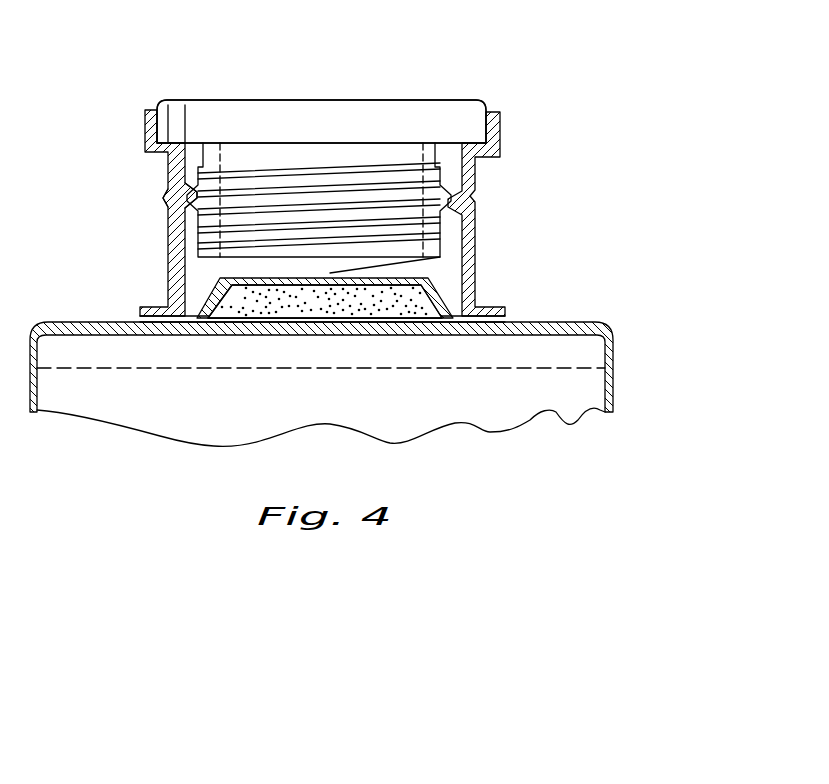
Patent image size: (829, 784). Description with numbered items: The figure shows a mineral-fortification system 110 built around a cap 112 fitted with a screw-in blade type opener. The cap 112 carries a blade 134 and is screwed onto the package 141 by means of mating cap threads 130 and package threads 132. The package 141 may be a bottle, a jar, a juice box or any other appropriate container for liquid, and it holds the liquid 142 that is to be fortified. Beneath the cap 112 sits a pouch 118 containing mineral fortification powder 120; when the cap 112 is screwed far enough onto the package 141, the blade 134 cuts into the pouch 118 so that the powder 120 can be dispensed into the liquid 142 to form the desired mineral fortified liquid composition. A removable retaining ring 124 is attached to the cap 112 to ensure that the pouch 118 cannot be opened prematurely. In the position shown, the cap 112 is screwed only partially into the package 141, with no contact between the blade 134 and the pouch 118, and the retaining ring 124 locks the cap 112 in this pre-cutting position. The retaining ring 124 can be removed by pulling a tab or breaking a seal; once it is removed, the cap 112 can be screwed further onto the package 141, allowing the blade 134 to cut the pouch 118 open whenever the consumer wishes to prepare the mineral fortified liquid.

The mineral-fortification system 110 is at (543, 73).
The cap 112 is at (226, 108).
The pouch 118 is at (437, 290).
The mineral fortification powder 120 is at (428, 308).
The removable retaining ring 124 is at (478, 195).
The cap threads 130 is at (168, 192).
The package threads 132 is at (183, 211).
The blade 134 is at (330, 276).
The package 141 is at (615, 358).
The liquid 142 is at (583, 390).